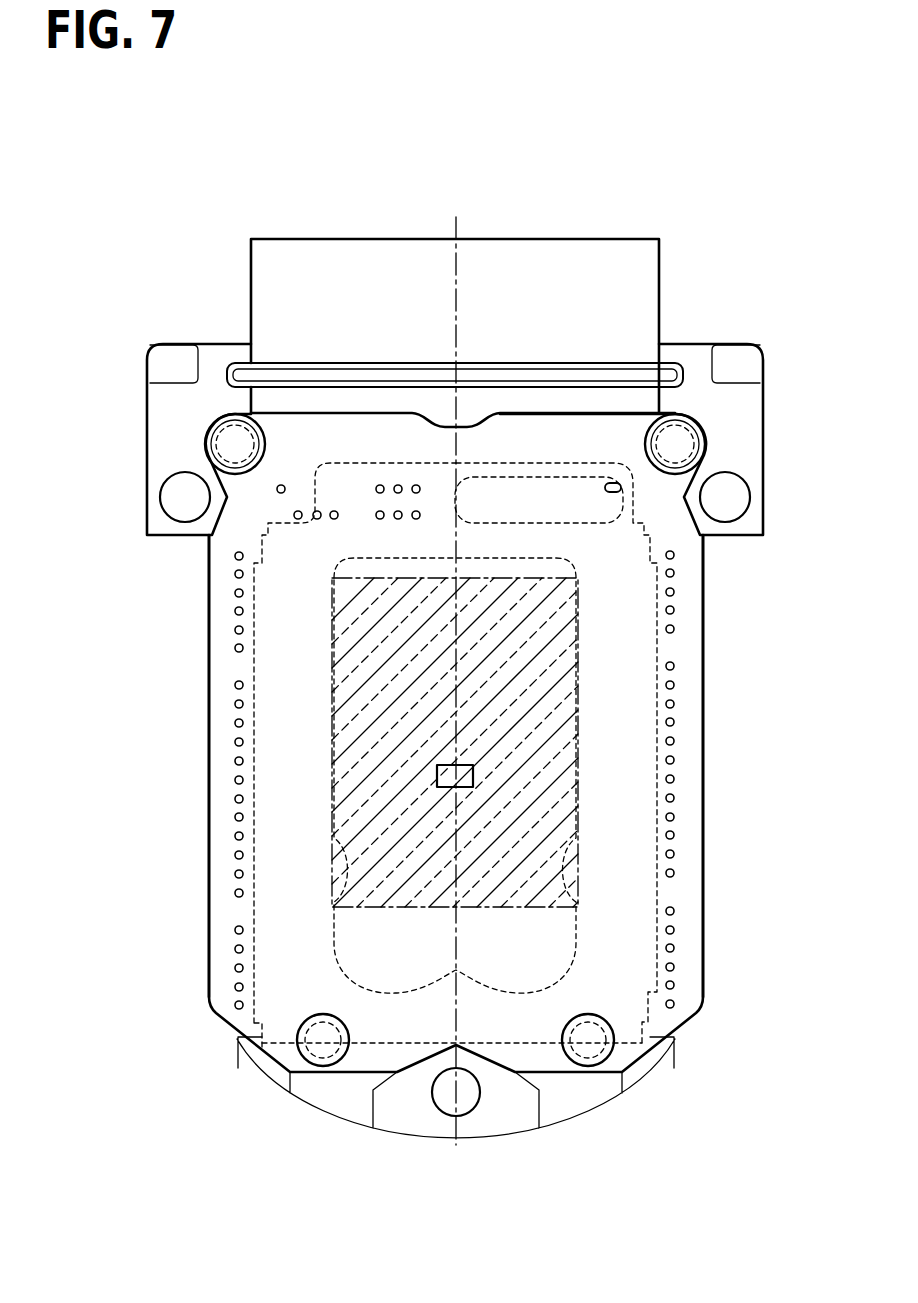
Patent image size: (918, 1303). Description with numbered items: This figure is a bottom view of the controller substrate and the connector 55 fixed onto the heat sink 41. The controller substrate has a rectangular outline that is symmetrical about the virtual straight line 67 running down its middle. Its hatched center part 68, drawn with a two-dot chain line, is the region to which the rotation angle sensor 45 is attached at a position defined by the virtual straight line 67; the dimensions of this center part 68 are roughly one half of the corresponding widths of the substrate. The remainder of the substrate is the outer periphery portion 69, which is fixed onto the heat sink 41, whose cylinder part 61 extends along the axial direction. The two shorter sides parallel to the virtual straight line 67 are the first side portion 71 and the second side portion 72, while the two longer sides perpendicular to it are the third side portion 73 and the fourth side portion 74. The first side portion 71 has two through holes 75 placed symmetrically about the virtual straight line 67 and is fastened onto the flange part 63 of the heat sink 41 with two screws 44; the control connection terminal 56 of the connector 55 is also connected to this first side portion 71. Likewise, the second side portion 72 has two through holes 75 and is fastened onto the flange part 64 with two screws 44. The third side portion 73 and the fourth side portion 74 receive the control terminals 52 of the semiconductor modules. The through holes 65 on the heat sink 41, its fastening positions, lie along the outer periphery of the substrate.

The heat sink 41 is at (174, 341).
The screw 44 is at (597, 1035).
The rotation angle sensor 45 is at (445, 776).
The control terminal 52 is at (745, 646).
The connector 55 is at (633, 253).
The control connection terminal 56 is at (416, 485).
The cylinder part 61 is at (292, 698).
The flange part 63 is at (742, 360).
The flange part 64 is at (565, 1103).
The through hole 65 is at (432, 1076).
The virtual straight line 67 is at (457, 228).
The center part 68 is at (578, 682).
The outer periphery portion 69 is at (620, 818).
The first side portion 71 is at (313, 435).
The second side portion 72 is at (397, 1028).
The third side portion 73 is at (222, 753).
The fourth side portion 74 is at (687, 757).
The through hole 75 is at (600, 1058).